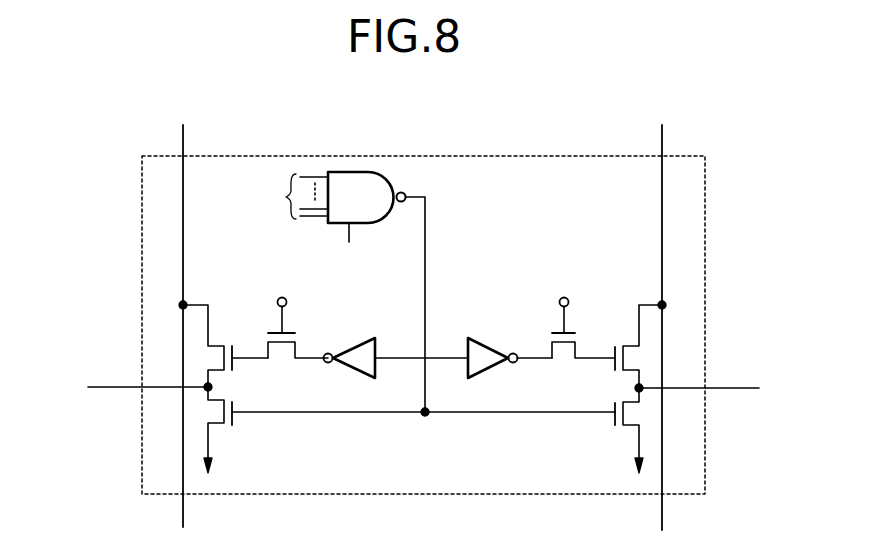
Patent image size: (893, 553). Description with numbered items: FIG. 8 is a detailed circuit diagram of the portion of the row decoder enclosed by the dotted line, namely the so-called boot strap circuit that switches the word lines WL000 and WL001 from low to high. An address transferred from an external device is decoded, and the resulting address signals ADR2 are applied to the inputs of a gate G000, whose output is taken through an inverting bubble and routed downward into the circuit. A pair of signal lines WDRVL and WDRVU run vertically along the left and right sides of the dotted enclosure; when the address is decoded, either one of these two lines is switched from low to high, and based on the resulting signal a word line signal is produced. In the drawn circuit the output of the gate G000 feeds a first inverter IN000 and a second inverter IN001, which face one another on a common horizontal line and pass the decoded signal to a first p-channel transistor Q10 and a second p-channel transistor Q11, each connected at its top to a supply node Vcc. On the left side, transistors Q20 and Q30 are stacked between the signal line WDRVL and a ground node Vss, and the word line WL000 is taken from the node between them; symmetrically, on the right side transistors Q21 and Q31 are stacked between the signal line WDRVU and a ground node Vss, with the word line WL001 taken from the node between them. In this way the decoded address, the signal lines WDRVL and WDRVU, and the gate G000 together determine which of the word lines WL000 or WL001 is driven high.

The signal line WDRVL is at (183, 138).
The signal line WDRVU is at (662, 138).
The gate G000 is at (374, 292).
The address signal inputs ADR2 is at (269, 196).
The PMOS transistor Q10 is at (303, 338).
The PMOS transistor Q11 is at (573, 360).
The transistor Q20 is at (233, 365).
The transistor Q21 is at (642, 303).
The transistor Q30 is at (233, 421).
The transistor Q31 is at (615, 425).
The inverter IN000 is at (360, 338).
The inverter IN001 is at (483, 338).
The word line WL000 is at (100, 388).
The word line WL001 is at (738, 390).
The supply voltage Vcc is at (276, 290).
The ground voltage Vss is at (423, 475).